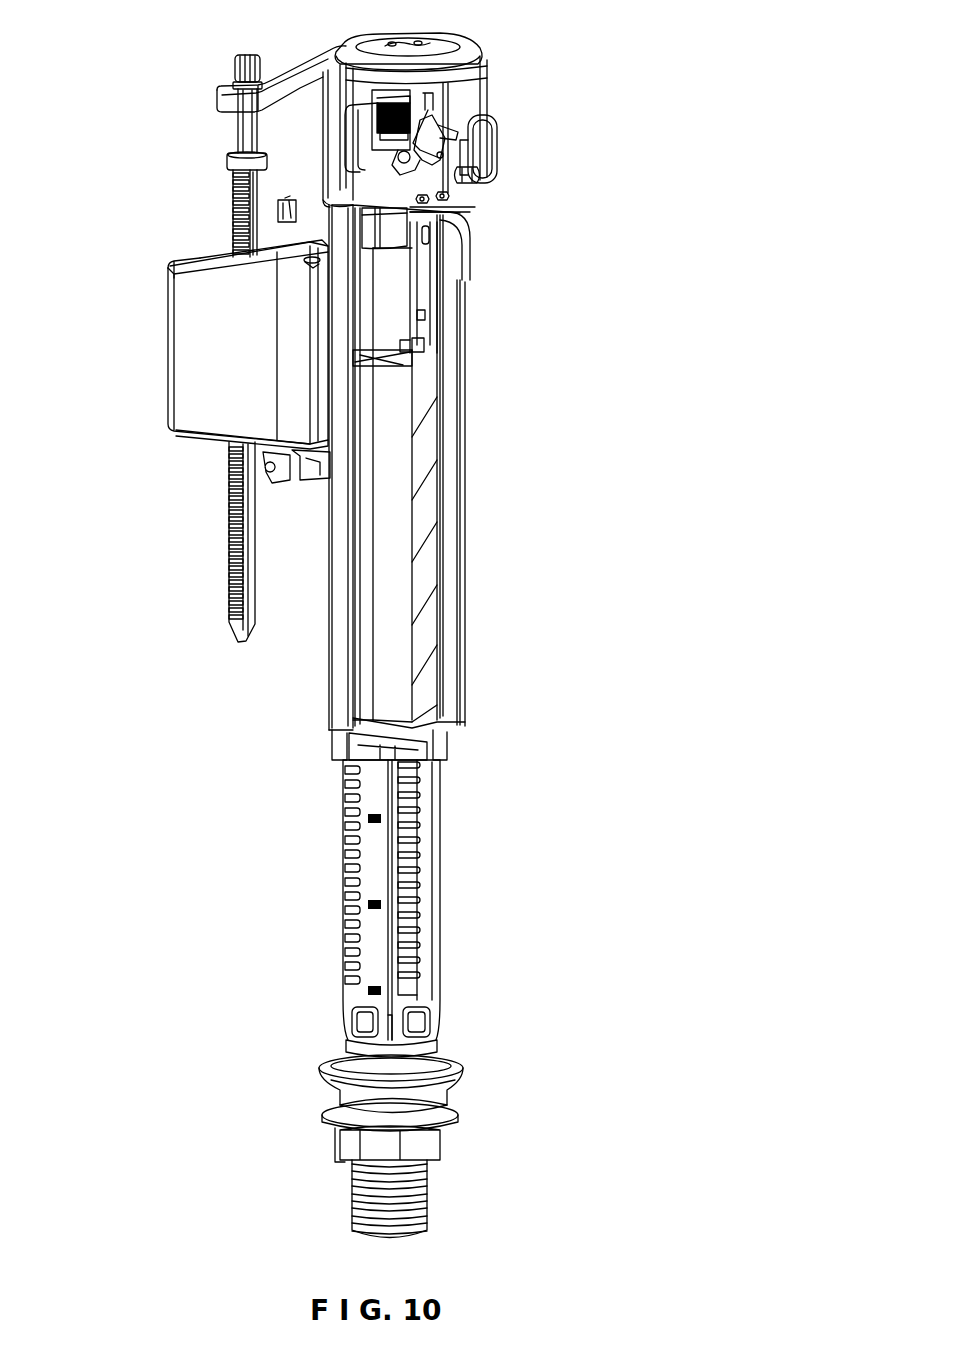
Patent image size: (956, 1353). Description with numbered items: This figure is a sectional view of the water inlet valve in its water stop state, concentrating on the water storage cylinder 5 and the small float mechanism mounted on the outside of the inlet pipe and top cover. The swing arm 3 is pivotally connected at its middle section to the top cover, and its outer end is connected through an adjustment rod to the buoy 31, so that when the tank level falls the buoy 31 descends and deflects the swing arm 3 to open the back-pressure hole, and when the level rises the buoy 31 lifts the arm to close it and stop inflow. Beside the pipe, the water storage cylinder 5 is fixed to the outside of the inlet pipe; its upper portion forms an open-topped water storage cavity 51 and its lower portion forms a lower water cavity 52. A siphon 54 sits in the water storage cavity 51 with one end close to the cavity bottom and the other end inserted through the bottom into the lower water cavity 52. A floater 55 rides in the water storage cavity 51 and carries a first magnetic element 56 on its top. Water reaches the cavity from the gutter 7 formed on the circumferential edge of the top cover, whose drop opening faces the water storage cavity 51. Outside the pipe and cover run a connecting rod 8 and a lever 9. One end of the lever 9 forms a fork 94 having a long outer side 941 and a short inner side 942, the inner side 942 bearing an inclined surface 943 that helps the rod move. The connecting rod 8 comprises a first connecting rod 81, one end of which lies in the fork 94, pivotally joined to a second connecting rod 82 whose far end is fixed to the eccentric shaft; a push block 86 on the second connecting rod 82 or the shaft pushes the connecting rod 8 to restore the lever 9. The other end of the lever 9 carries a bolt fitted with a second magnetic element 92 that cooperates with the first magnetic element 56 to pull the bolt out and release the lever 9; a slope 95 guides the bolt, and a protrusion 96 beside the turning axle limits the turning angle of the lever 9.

The swing arm 3 is at (288, 80).
The water storage cylinder 5 is at (357, 441).
The gutter 7 is at (452, 60).
The connecting rod 8 is at (519, 201).
The lever 9 is at (345, 158).
The buoy 31 is at (190, 400).
The water storage cavity 51 is at (360, 358).
The lower water cavity 52 is at (357, 517).
The siphon 54 is at (420, 304).
The floater 55 is at (431, 232).
The first magnetic element 56 is at (345, 120).
The first connecting rod 81 is at (476, 193).
The second connecting rod 82 is at (478, 176).
The push block 86 is at (492, 160).
The second magnetic element 92 is at (400, 112).
The fork 94 is at (118, 213).
The slope 95 is at (414, 128).
The protrusion 96 is at (440, 150).
The outer side 941 is at (337, 235).
The inner side 942 is at (348, 192).
The inclined surface 943 is at (168, 277).